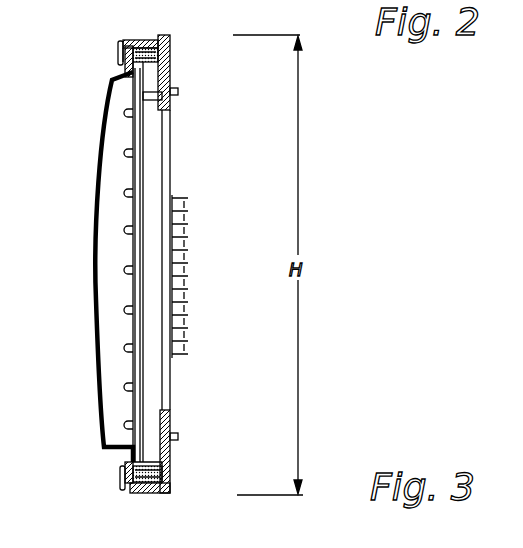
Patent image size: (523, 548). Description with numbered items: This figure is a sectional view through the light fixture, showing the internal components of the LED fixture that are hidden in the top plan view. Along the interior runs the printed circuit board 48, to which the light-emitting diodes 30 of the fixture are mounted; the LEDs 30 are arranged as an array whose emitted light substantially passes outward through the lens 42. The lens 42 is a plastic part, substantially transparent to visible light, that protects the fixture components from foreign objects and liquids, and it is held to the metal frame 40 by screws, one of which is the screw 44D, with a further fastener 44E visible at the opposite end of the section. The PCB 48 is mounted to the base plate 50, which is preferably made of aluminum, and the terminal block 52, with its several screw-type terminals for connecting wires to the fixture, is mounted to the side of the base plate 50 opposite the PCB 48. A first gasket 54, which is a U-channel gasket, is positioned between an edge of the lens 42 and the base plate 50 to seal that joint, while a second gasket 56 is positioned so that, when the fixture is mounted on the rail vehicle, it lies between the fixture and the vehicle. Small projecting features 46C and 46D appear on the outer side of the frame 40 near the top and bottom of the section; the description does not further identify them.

The light-emitting diodes 30 is at (125, 153).
The frame 40 is at (126, 490).
The lens 42 is at (94, 281).
The screw 44D is at (120, 48).
The lower retaining clip 44E is at (121, 471).
The lower mounting tab 46C is at (178, 437).
The upper mounting tab 46D is at (178, 92).
The printed circuit board 48 is at (164, 104).
The base plate 50 is at (146, 39).
The terminal block 52 is at (182, 197).
The first gasket 54 is at (170, 77).
The second gasket 56 is at (170, 458).